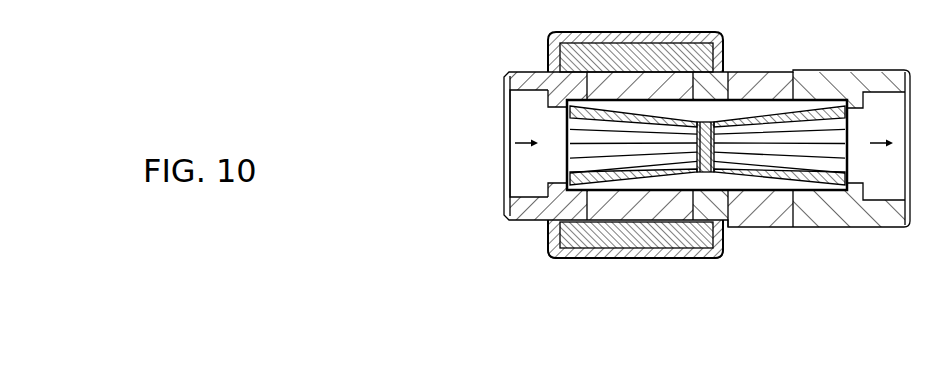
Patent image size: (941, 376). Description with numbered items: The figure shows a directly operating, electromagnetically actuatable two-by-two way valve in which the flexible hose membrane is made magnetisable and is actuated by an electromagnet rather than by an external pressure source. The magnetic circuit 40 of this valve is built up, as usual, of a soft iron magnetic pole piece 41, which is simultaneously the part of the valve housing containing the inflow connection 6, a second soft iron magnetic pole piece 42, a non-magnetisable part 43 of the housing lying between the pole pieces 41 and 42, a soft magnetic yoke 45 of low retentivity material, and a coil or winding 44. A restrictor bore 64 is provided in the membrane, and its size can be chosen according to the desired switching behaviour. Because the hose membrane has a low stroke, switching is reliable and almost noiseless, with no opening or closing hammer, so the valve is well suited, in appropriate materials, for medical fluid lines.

The inflow connection 6 is at (524, 182).
The restrictor bore 64 is at (637, 102).
The magnetic circuit 40 is at (627, 258).
The magnetic pole piece 41 is at (530, 212).
The magnetic pole piece 42 is at (722, 228).
The non-magnetisable part of the housing 43 is at (678, 232).
The coil 44 is at (558, 263).
The soft magnetic yoke 45 is at (583, 258).